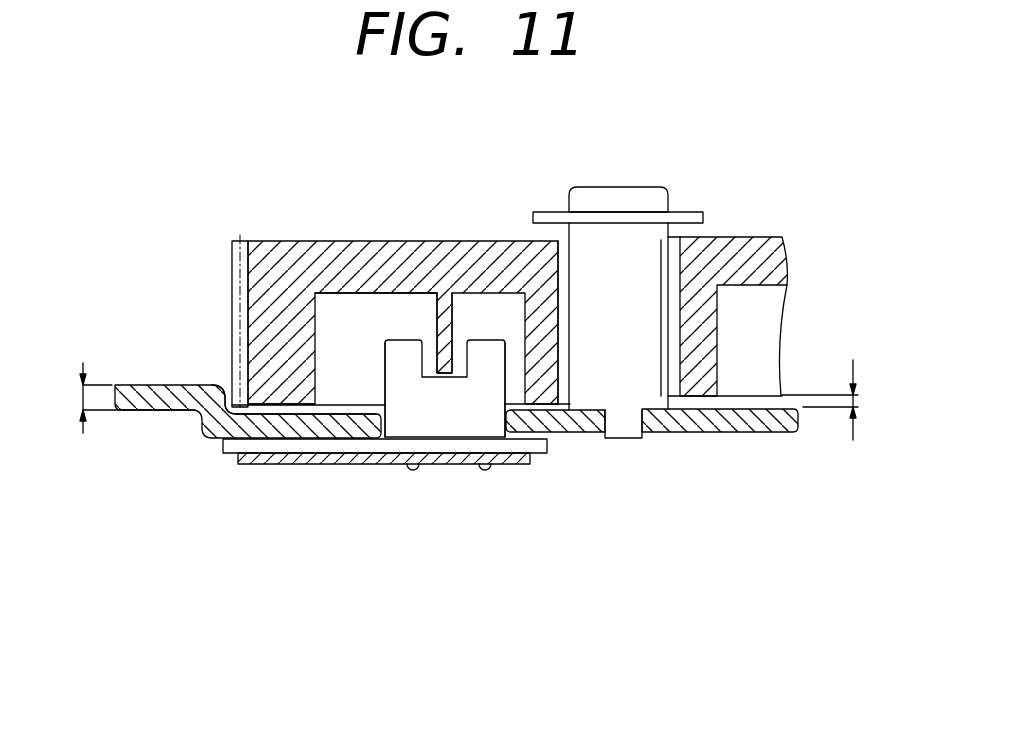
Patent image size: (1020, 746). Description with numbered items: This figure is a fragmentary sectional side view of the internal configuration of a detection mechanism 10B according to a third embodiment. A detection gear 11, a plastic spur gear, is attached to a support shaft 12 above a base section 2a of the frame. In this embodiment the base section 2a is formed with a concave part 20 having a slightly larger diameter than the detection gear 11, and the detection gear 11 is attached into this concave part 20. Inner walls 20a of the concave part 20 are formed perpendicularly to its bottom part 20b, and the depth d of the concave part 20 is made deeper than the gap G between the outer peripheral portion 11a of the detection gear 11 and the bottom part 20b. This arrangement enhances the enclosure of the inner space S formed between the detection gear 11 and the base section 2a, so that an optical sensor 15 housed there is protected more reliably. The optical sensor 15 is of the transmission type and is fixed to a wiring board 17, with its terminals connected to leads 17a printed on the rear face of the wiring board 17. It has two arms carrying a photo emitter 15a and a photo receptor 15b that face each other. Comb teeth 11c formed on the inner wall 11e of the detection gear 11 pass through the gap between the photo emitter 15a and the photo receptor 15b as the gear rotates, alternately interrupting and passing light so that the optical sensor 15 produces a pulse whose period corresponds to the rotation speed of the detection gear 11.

The detection mechanism 10B is at (170, 172).
The detection gear 11 is at (492, 252).
The outer peripheral portion 11a is at (266, 396).
The comb teeth 11c is at (431, 335).
The inner wall 11e is at (368, 305).
The support shaft 12 is at (651, 192).
The base section 2a is at (585, 442).
The optical sensor 15 is at (450, 398).
The photo emitter 15a is at (408, 355).
The photo receptor 15b is at (480, 363).
The wiring board 17 is at (223, 448).
The leads 17a is at (236, 463).
The concave part 20 is at (368, 416).
The inner walls 20a is at (227, 393).
The bottom part 20b is at (313, 416).
The space S is at (338, 331).
The depth d is at (122, 398).
The gap G is at (833, 400).